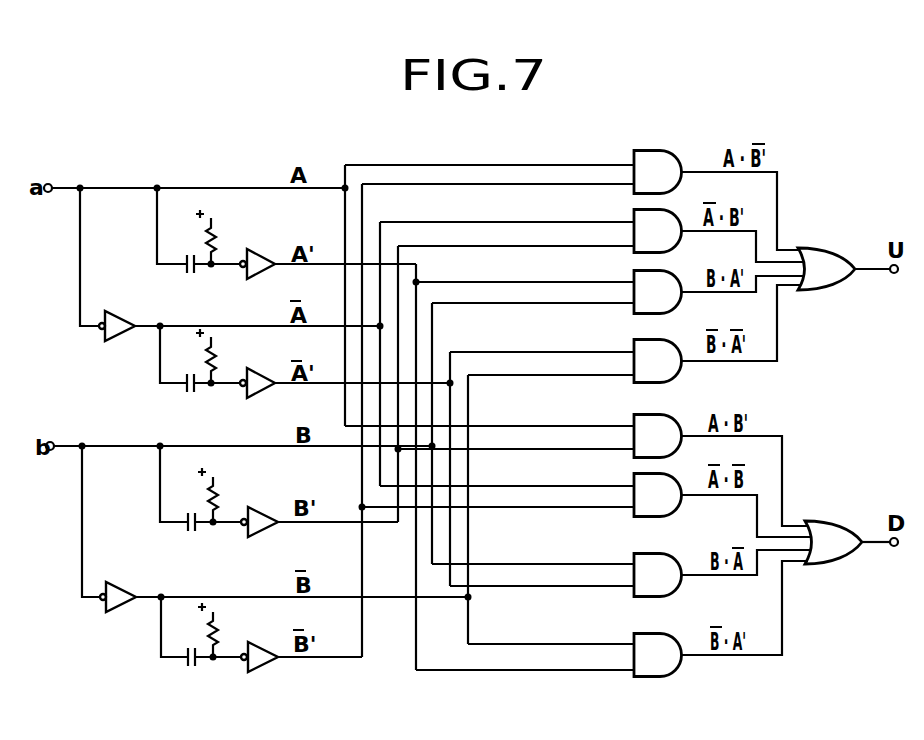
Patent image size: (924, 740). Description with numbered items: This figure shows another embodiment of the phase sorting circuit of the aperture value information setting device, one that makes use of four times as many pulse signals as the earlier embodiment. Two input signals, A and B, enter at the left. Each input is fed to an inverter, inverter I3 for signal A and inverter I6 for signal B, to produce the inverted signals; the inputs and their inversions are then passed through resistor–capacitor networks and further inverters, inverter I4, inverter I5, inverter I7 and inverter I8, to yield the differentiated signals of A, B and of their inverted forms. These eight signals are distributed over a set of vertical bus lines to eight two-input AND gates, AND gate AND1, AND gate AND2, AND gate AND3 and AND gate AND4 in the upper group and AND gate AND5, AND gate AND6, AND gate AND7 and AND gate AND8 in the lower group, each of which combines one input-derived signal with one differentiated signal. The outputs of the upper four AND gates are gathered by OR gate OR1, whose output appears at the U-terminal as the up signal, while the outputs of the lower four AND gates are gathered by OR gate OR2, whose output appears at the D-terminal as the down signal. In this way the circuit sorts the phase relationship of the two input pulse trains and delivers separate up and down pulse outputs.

The inverter I3 is at (115, 325).
The inverter I4 is at (256, 262).
The inverter I5 is at (257, 382).
The inverter I6 is at (119, 595).
The inverter I7 is at (259, 520).
The inverter I8 is at (259, 655).
The AND gate AND1 is at (657, 160).
The AND gate AND2 is at (643, 244).
The AND gate AND3 is at (643, 304).
The AND gate AND4 is at (643, 375).
The AND gate AND5 is at (643, 449).
The AND gate AND6 is at (643, 507).
The AND gate AND7 is at (643, 586).
The AND gate AND8 is at (643, 670).
The OR gate OR1 is at (826, 269).
The OR gate OR2 is at (833, 542).